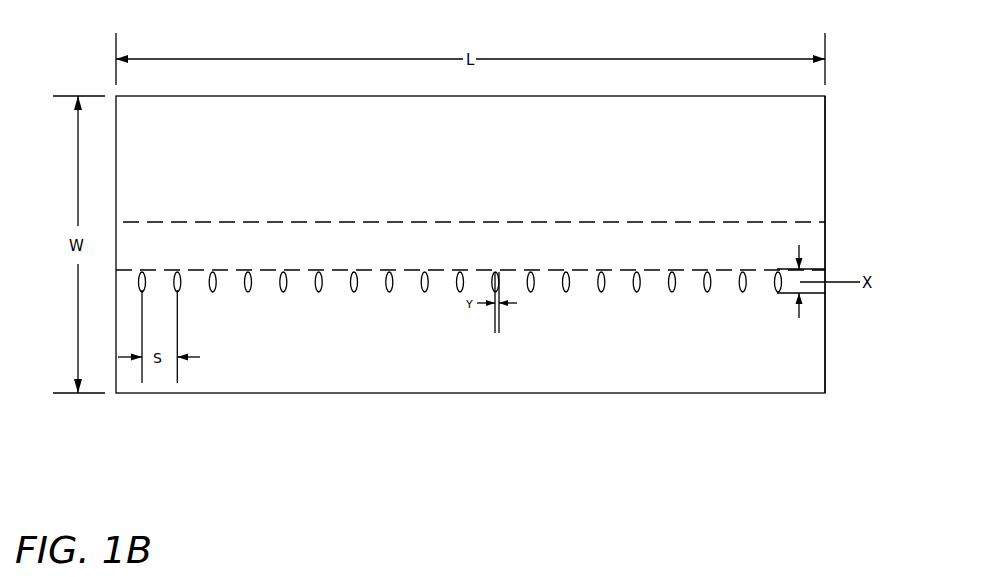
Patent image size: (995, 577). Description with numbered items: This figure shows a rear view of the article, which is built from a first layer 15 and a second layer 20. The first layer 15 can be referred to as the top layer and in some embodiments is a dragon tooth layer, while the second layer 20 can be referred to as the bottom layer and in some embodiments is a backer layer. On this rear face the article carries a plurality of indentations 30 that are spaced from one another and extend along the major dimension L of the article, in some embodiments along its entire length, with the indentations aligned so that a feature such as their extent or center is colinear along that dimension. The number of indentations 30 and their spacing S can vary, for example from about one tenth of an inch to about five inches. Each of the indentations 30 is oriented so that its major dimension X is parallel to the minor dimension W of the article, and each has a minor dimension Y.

The first layer 15 is at (805, 152).
The second layer 20 is at (826, 357).
The plurality of indentations 30 is at (319, 292).